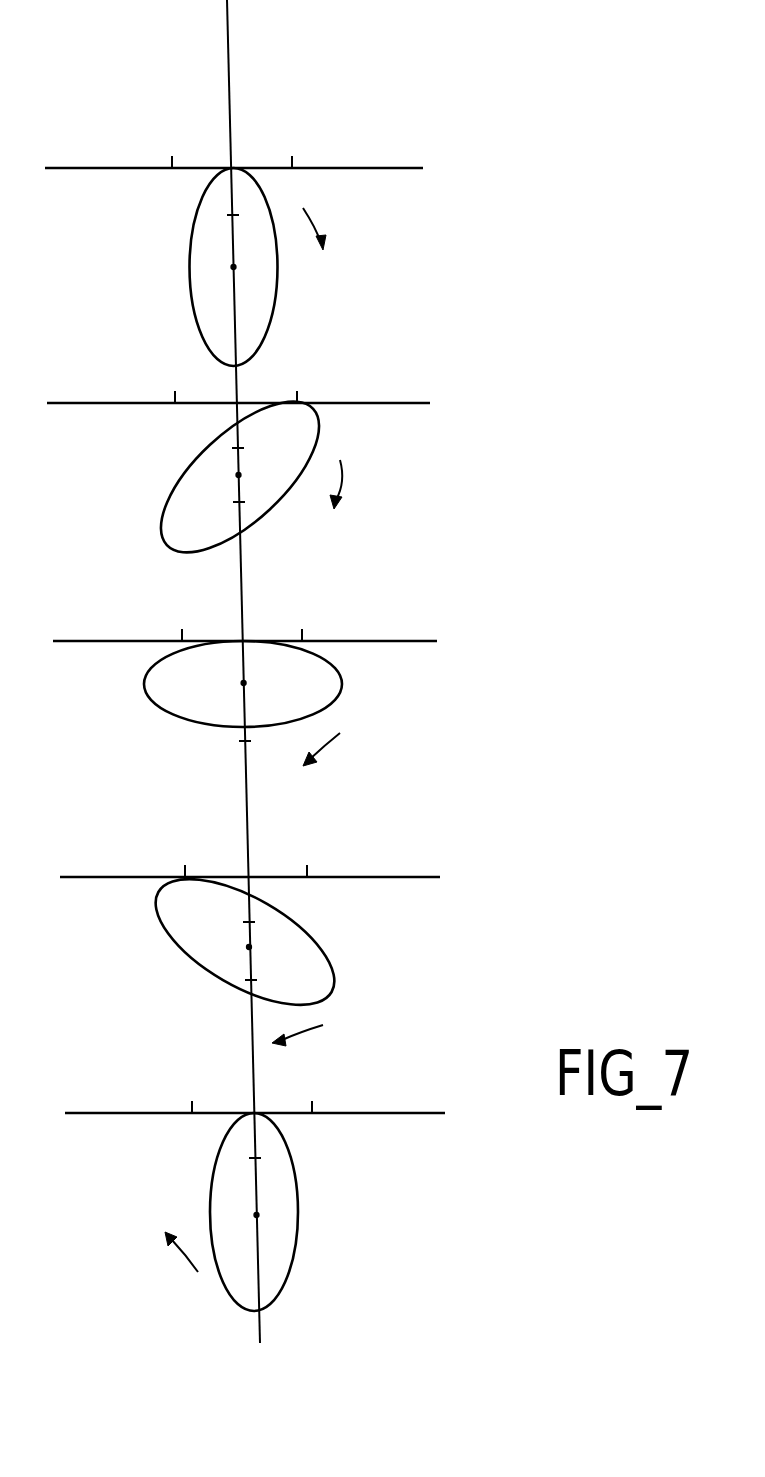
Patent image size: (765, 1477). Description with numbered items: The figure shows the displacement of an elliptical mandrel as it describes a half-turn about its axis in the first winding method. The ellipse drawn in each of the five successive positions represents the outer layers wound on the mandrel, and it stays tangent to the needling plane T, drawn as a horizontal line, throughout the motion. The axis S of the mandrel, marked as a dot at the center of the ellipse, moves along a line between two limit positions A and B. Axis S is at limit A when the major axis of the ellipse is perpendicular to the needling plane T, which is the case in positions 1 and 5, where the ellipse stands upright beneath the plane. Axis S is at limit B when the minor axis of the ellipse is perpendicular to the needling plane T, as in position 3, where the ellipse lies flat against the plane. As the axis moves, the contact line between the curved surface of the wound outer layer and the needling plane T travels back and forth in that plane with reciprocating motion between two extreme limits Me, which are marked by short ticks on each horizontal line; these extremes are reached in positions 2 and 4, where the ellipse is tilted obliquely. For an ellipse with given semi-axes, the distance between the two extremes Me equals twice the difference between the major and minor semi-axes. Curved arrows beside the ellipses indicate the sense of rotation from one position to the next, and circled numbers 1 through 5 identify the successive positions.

The needling plane T is at (393, 168).
The contact line limits Me is at (232, 618).
The mandrel axis S is at (233, 740).
The limit position A is at (259, 740).
The limit position B is at (254, 687).
The position 1 is at (326, 267).
The position 2 is at (306, 477).
The position 3 is at (308, 703).
The position 4 is at (310, 950).
The position 5 is at (328, 1212).